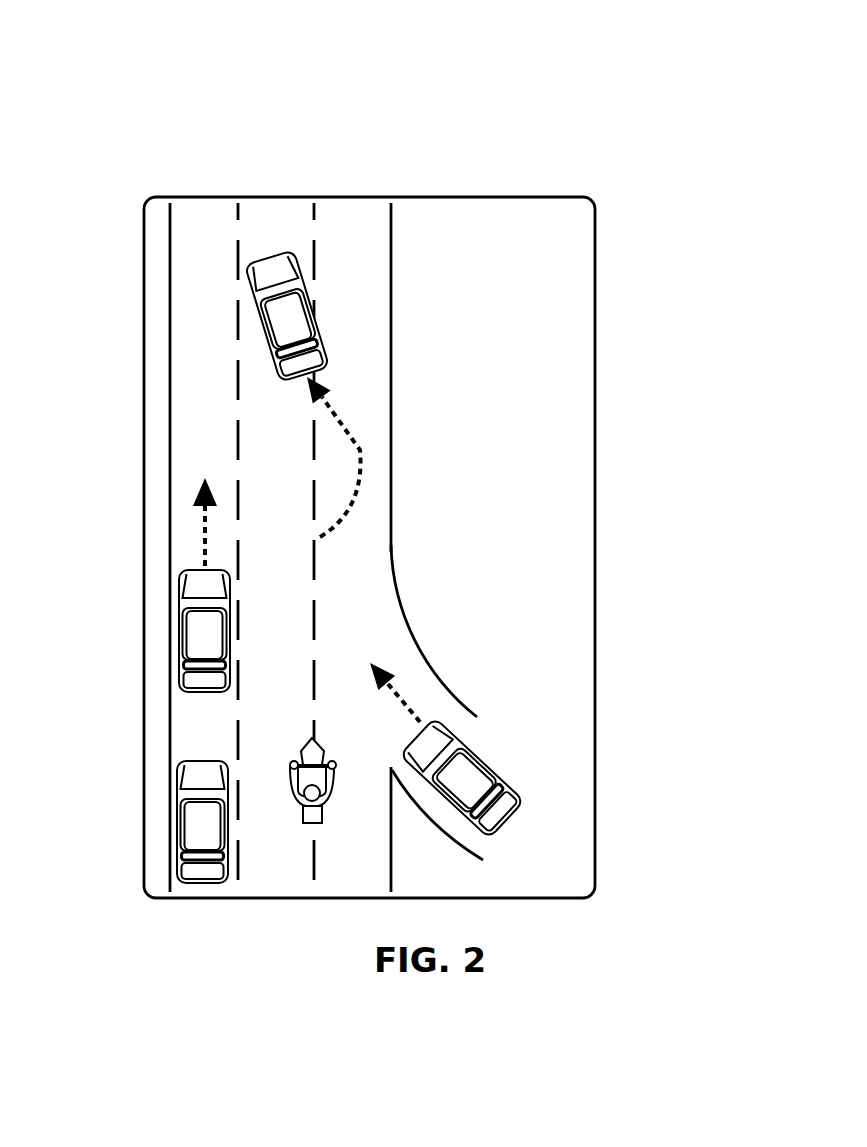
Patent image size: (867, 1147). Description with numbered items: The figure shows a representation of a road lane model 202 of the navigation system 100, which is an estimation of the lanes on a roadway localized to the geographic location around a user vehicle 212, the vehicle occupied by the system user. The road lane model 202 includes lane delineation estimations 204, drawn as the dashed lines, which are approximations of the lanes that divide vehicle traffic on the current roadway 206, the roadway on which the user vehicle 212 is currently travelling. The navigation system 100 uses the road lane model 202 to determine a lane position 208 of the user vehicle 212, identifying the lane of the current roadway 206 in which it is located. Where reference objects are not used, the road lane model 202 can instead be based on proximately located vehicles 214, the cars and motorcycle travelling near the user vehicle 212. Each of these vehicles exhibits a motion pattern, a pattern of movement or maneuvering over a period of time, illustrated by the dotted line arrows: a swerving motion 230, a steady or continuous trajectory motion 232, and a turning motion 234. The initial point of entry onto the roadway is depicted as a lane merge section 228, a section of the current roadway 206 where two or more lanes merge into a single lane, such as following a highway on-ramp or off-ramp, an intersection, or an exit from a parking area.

The navigation system 100 is at (138, 57).
The road lane model 202 is at (489, 197).
The lane delineation estimations 204 is at (318, 268).
The current roadway 206 is at (400, 373).
The lane position 208 is at (277, 228).
The user vehicle 212 is at (460, 782).
The proximately located vehicles 214 is at (227, 288).
The lane merge section 228 is at (473, 713).
The swerving motion 230 is at (370, 450).
The steady or continuous trajectory motion 232 is at (222, 552).
The turning motion 234 is at (404, 694).